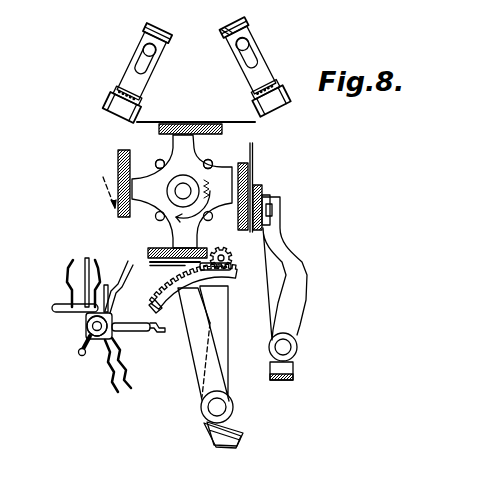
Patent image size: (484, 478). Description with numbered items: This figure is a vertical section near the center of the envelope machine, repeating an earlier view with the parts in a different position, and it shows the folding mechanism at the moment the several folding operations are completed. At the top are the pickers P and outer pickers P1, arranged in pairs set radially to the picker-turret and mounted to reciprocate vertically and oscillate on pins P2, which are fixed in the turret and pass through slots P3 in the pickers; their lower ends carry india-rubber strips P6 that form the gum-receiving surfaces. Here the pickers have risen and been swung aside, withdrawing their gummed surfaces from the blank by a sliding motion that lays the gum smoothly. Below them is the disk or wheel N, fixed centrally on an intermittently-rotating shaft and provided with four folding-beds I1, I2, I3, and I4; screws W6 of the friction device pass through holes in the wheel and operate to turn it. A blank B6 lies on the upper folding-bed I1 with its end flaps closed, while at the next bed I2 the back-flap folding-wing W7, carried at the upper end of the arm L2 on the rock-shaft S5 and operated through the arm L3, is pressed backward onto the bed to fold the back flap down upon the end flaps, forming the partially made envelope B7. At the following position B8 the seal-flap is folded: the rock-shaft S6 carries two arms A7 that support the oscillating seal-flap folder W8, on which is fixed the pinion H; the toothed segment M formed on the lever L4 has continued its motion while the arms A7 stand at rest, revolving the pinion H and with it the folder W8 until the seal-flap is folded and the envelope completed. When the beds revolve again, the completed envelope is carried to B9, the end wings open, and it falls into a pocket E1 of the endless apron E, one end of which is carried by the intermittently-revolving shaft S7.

The inner picker P is at (252, 62).
The outer picker P1 is at (140, 68).
The pin P2 is at (226, 50).
The slot P3 is at (136, 53).
The india-rubber strip P6 is at (315, 117).
The blank B6 is at (183, 122).
The partially made envelope B7 is at (248, 171).
The partially made envelope with seal-flap at right B8 is at (160, 266).
The completed envelope B9 is at (116, 170).
The folding-bed I1 is at (145, 126).
The folding-bed I2 is at (249, 160).
The folding-bed I3 is at (157, 246).
The folding-bed I4 is at (163, 131).
The disk or wheel N is at (182, 191).
The screw W6 is at (204, 163).
The back-flap folding-wing W7 is at (262, 189).
The seal-flap folder W8 is at (233, 258).
The pinion H is at (232, 247).
The toothed segment M is at (233, 283).
The arm L2 is at (293, 319).
The arm L3 is at (289, 379).
The lever L4 is at (203, 338).
The arm A7 is at (226, 352).
The rock-shaft S5 is at (296, 359).
The rock-shaft S6 is at (233, 412).
The intermittently-revolving shaft S7 is at (58, 348).
The endless apron E is at (93, 361).
The pocket E1 is at (128, 266).